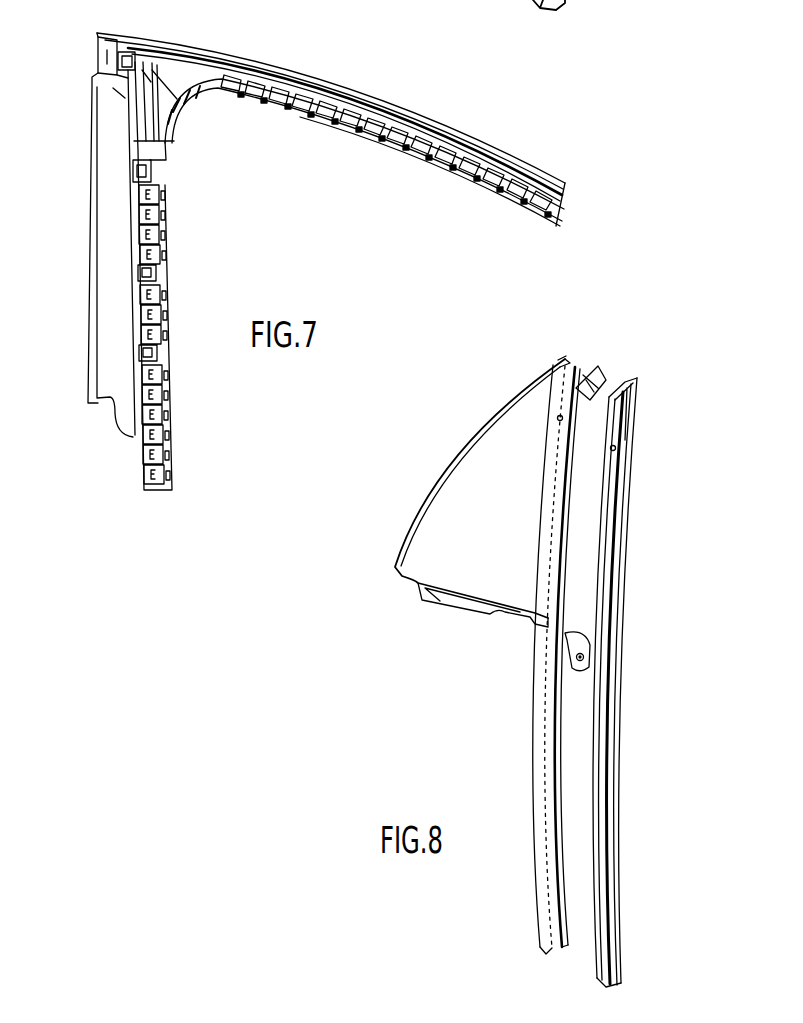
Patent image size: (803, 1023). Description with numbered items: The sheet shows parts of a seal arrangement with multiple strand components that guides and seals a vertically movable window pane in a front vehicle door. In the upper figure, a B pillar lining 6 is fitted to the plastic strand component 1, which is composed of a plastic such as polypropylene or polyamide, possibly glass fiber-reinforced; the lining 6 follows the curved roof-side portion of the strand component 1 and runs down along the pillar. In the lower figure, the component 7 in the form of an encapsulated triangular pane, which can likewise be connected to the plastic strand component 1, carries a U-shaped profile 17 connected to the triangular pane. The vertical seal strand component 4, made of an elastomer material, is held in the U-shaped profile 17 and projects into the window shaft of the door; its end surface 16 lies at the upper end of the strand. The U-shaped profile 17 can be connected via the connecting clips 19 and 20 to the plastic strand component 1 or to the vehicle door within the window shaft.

In FIG. 7, the plastic strand component 1 is at (521, 169).
In FIG. 7, the B pillar lining 6 is at (107, 322).
In FIG. 8, the component in the form of an encapsulated triangular pane 7 is at (443, 464).
In FIG. 8, the connecting clip 19 is at (598, 373).
In FIG. 8, the end surface 16 is at (632, 380).
In FIG. 8, the seal strand component 4 is at (624, 517).
In FIG. 8, the connecting clip 20 is at (580, 660).
In FIG. 8, the U-shaped profile 17 is at (553, 732).